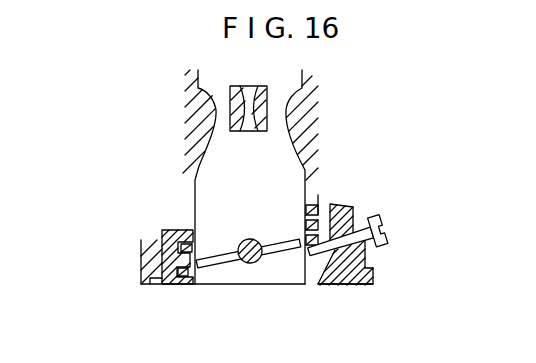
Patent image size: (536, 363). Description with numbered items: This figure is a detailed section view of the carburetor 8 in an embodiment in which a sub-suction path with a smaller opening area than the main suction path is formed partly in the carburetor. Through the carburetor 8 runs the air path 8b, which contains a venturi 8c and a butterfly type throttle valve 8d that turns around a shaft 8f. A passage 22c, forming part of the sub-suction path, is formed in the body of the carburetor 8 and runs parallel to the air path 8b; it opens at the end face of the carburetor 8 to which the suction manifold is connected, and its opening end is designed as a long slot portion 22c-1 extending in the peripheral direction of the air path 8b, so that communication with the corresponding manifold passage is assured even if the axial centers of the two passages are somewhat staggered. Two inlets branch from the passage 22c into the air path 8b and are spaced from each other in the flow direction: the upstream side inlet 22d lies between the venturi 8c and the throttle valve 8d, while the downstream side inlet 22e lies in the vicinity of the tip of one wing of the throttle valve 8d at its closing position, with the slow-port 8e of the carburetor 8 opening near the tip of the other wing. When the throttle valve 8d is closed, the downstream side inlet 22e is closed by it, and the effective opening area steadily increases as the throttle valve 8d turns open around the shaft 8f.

The carburetor 8 is at (164, 152).
The air path 8b is at (291, 177).
The venturi 8c is at (289, 113).
The throttle valve 8d is at (285, 251).
The slow-port 8e is at (368, 248).
The shaft 8f is at (236, 261).
The passage 22c is at (141, 251).
The long slot portion 22c-1 is at (152, 283).
The upstream side inlet 22d is at (180, 232).
The downstream side inlet 22e is at (188, 262).